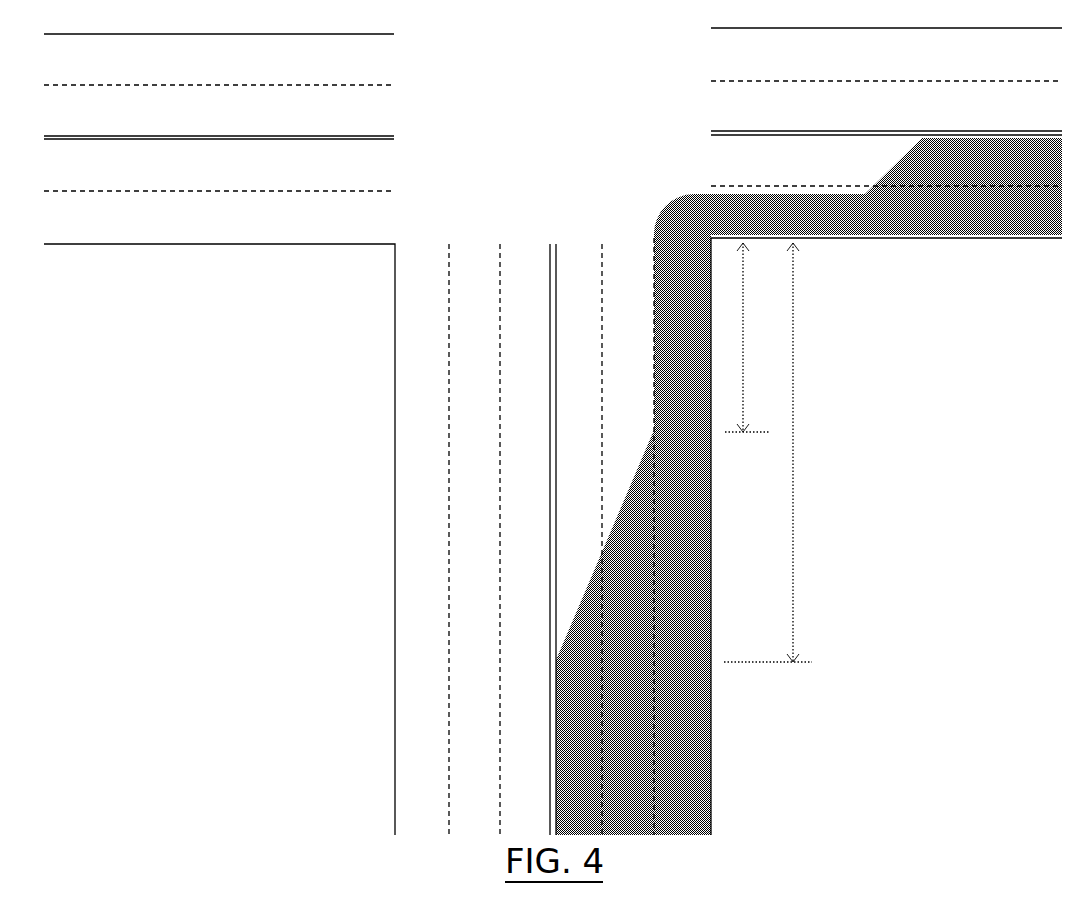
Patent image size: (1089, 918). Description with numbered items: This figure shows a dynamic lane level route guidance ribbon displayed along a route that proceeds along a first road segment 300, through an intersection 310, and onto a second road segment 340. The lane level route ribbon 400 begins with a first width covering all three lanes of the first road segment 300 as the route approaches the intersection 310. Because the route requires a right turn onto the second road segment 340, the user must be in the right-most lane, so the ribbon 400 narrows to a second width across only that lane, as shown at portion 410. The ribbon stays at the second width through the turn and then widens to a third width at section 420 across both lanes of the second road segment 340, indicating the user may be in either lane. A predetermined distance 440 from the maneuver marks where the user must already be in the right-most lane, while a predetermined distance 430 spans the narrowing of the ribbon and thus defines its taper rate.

The first road segment 300 is at (219, 539).
The intersection 310 is at (237, 170).
The second road segment 340 is at (886, 536).
The lane level route ribbon 400 is at (633, 632).
The portion of the ribbon 410 is at (615, 298).
The section of the ribbon 420 is at (886, 207).
The predetermined distance 430 is at (769, 452).
The predetermined distance 440 is at (747, 337).